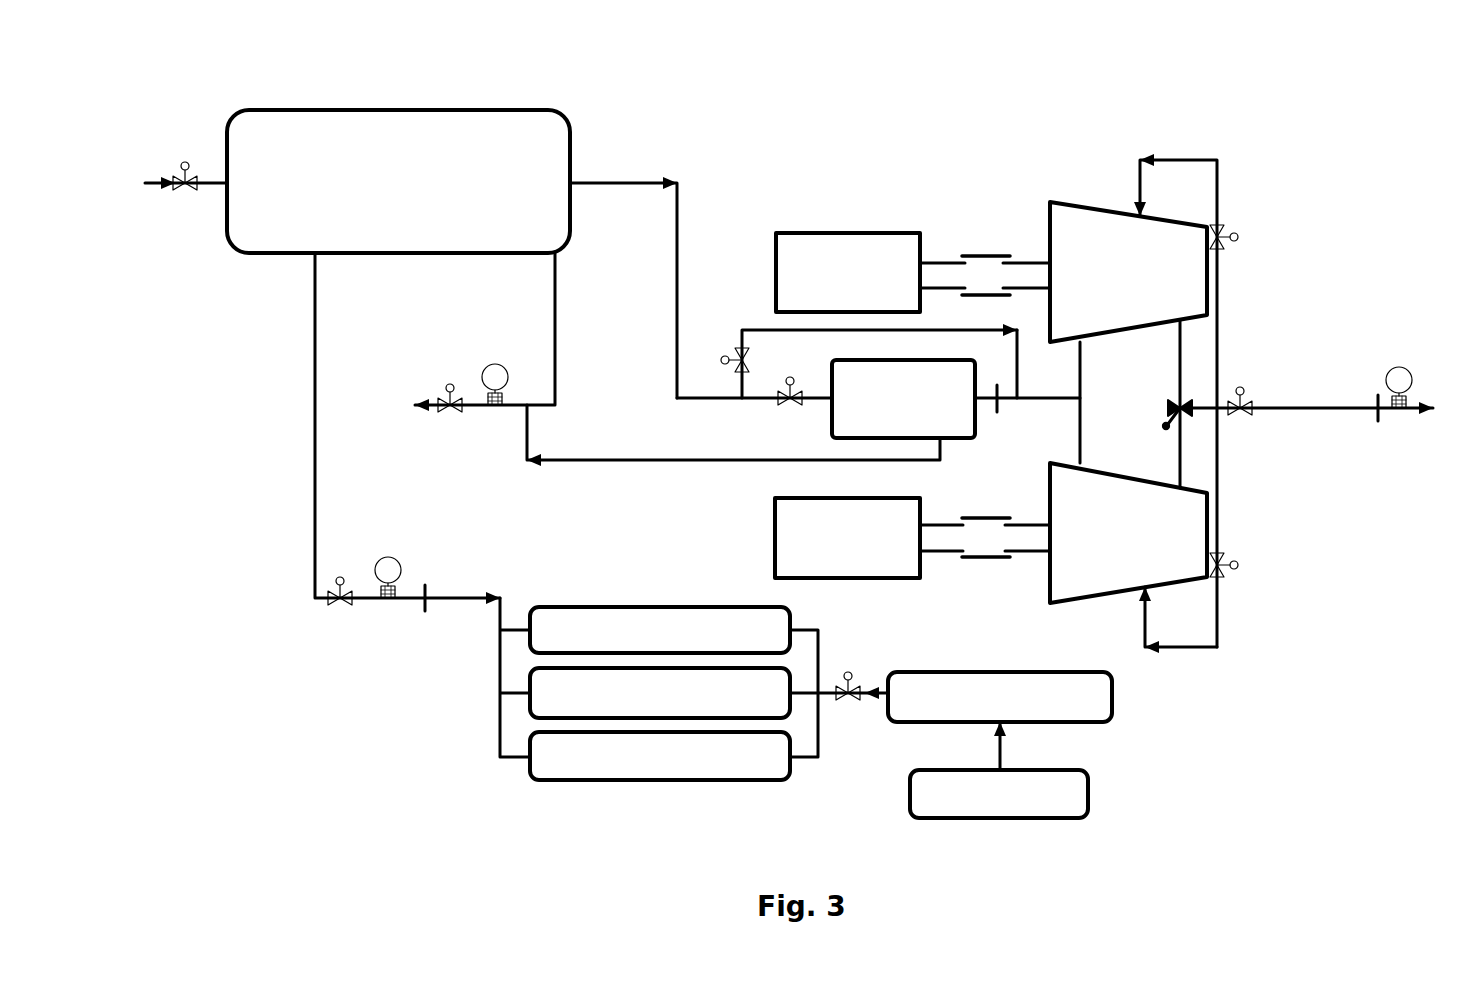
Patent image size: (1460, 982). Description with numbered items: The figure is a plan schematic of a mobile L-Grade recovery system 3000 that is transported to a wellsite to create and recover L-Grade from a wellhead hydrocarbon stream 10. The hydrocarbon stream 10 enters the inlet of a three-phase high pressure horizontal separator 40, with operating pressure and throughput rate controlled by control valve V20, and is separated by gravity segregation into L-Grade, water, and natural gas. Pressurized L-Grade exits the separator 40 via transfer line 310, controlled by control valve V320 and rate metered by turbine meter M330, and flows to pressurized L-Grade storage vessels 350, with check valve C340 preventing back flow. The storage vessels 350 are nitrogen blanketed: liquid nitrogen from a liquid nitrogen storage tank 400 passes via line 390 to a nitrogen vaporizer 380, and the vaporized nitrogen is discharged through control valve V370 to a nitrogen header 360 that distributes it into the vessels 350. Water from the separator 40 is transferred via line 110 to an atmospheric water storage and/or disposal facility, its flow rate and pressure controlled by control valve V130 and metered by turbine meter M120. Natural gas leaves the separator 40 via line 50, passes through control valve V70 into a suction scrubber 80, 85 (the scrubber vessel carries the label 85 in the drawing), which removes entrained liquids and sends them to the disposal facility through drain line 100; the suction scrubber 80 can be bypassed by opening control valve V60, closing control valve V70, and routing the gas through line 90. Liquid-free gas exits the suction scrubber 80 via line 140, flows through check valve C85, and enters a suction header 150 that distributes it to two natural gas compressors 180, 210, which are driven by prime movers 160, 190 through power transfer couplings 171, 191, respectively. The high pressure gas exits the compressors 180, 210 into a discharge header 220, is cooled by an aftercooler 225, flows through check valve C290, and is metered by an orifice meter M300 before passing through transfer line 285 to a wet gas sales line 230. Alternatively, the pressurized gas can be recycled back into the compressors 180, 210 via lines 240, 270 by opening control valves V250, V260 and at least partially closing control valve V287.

The mobile L-Grade recovery system 3000 is at (620, 57).
The wellhead hydrocarbon stream 10 is at (160, 180).
The control valve V20 is at (188, 196).
The three-phase high pressure horizontal separator 40 is at (478, 110).
The line 50 is at (593, 183).
The suction scrubber 80 is at (1000, 410).
The control valve V60 is at (742, 346).
The line 90 is at (1017, 386).
The control valve V70 is at (800, 378).
The suction scrubber 85 is at (903, 399).
The check valve C85 is at (998, 406).
The line 140 is at (1056, 401).
The suction header 150 is at (1082, 426).
The drain line 100 is at (650, 462).
The line 110 is at (560, 386).
The control valve V130 is at (454, 412).
The turbine meter M120 is at (504, 412).
The prime mover 160 is at (818, 233).
The power transfer coupling 171 is at (978, 256).
The natural gas compressor 180 is at (1096, 206).
The line 240 is at (1220, 320).
The control valve V250 is at (1230, 237).
The discharge header 220 is at (1180, 386).
The aftercooler 225 is at (1172, 410).
The transfer line 285 is at (1312, 410).
The wet gas sales line 230 is at (1432, 416).
The control valve V287 is at (1250, 413).
The check valve C290 is at (1378, 416).
The orifice meter M300 is at (1405, 420).
The prime mover 190 is at (776, 548).
The power transfer coupling 191 is at (995, 558).
The natural gas compressor 210 is at (1104, 604).
The line 270 is at (1182, 648).
The control valve V260 is at (1240, 568).
The transfer line 310 is at (312, 294).
The control valve V320 is at (348, 578).
The turbine meter M330 is at (400, 562).
The check valve C340 is at (428, 590).
The pressurized L-Grade storage vessels 350 is at (782, 607).
The nitrogen header 360 is at (820, 652).
The control valve V370 is at (852, 672).
The nitrogen vaporizer 380 is at (926, 672).
The line 390 is at (1003, 756).
The liquid nitrogen storage tank 400 is at (985, 818).